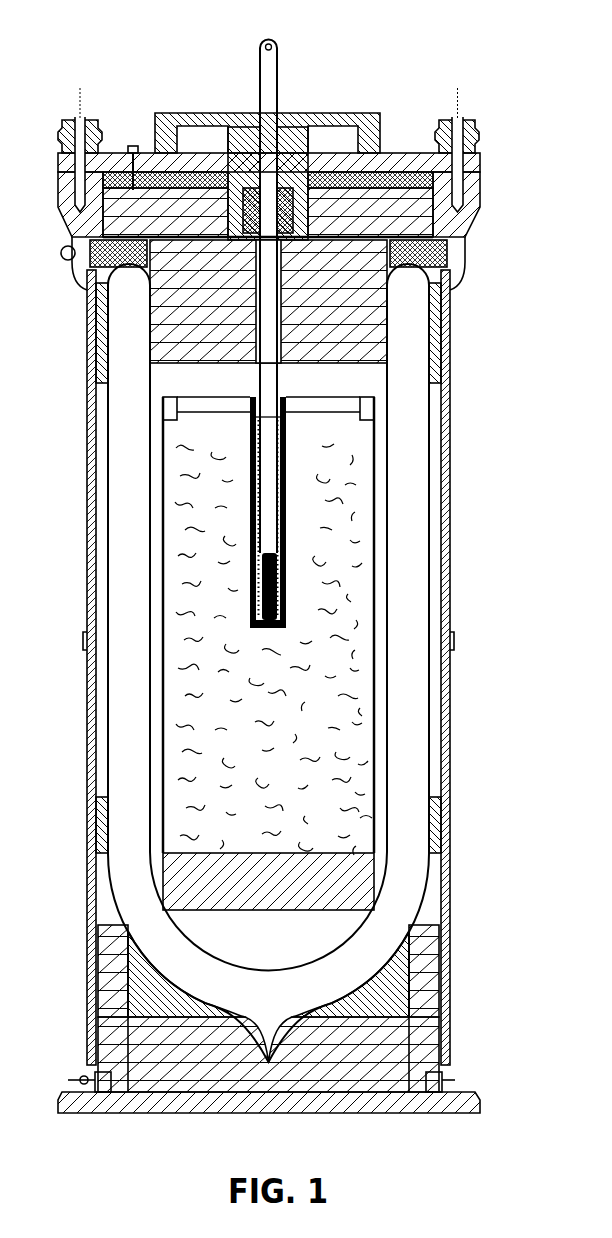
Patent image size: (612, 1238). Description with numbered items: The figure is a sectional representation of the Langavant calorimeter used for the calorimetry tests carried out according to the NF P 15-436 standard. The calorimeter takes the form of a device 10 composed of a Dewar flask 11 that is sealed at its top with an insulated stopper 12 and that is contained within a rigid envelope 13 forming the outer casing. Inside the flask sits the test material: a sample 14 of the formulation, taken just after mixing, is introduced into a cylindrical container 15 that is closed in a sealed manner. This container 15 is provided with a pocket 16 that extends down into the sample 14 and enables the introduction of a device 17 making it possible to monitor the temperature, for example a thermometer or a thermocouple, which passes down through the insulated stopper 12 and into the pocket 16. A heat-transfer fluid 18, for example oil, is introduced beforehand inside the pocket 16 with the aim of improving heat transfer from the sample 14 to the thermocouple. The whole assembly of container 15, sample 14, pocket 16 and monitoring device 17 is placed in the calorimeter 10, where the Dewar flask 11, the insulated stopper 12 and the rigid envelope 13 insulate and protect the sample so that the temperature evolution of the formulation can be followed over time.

The device 10 is at (310, 564).
The Dewar flask 11 is at (407, 298).
The insulated stopper 12 is at (367, 348).
The rigid envelope 13 is at (447, 647).
The sample 14 is at (338, 720).
The cylindrical container 15 is at (373, 670).
The pocket 16 is at (287, 425).
The device making it possible to monitor the temperature 17 is at (267, 381).
The heat-transfer fluid 18 is at (278, 477).